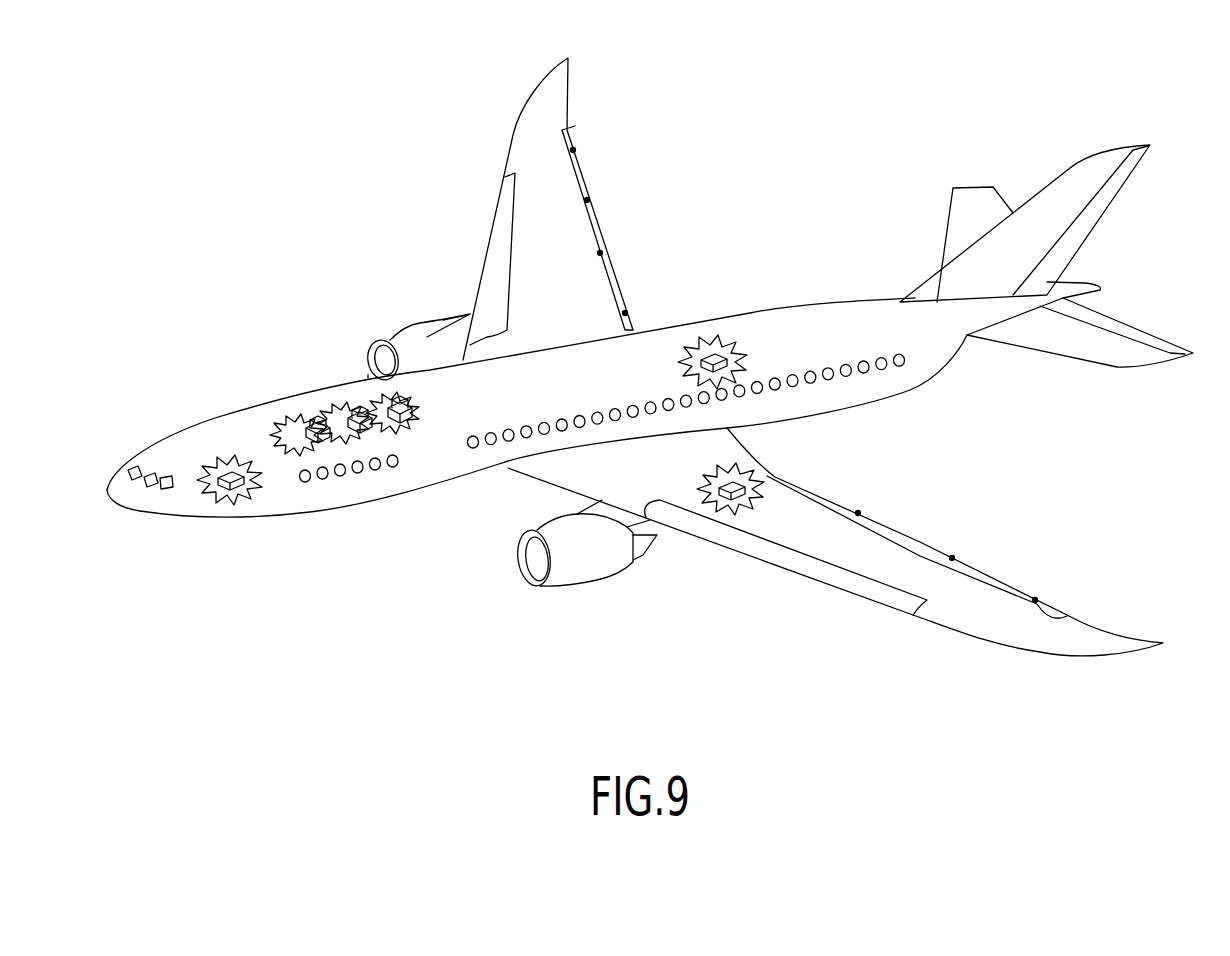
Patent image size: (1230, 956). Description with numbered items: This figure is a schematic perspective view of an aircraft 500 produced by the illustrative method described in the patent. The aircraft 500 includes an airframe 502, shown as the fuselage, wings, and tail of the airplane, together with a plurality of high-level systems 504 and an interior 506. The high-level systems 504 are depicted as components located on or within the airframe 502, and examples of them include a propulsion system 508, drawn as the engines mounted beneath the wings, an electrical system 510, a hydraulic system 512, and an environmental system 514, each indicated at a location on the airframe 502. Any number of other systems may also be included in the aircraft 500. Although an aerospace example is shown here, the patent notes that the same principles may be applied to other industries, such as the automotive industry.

The aircraft 500 is at (238, 182).
The airframe 502 is at (333, 363).
The high-level systems 504 is at (813, 274).
The interior 506 is at (310, 413).
The propulsion system 508 is at (590, 560).
The electrical system 510 is at (230, 457).
The hydraulic system 512 is at (735, 477).
The environmental system 514 is at (717, 340).